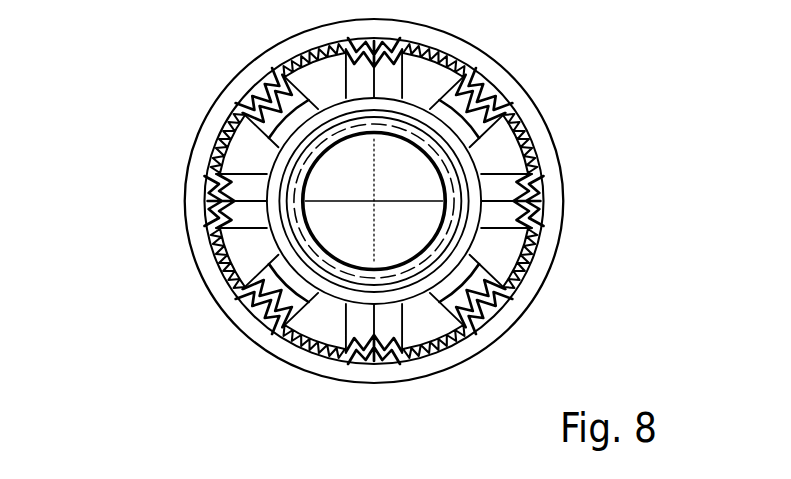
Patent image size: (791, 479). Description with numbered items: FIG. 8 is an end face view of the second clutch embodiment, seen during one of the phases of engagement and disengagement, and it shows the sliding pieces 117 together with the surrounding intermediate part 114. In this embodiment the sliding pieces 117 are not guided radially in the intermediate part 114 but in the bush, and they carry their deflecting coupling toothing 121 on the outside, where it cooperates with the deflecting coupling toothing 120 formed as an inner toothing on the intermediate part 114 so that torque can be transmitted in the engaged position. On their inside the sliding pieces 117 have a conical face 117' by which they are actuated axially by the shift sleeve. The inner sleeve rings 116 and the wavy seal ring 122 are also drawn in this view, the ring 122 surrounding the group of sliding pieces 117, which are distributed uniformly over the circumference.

The intermediate part 114 is at (232, 100).
The inner sleeve rings 116 is at (485, 266).
The sliding pieces 117 is at (548, 86).
The conical face 117' is at (546, 110).
The deflecting coupling toothing 120 is at (253, 308).
The deflecting coupling toothing 121 is at (206, 198).
The wavy seal ring 122 is at (540, 155).